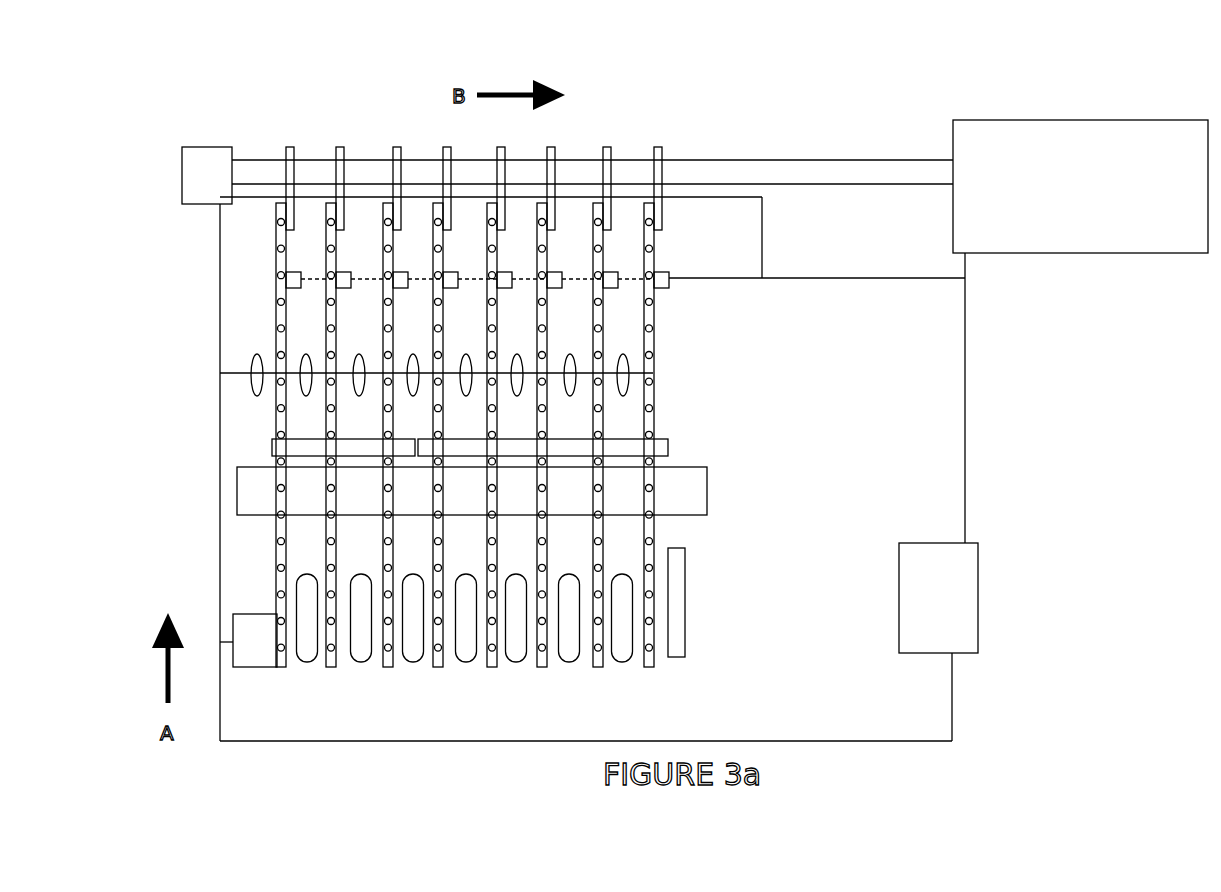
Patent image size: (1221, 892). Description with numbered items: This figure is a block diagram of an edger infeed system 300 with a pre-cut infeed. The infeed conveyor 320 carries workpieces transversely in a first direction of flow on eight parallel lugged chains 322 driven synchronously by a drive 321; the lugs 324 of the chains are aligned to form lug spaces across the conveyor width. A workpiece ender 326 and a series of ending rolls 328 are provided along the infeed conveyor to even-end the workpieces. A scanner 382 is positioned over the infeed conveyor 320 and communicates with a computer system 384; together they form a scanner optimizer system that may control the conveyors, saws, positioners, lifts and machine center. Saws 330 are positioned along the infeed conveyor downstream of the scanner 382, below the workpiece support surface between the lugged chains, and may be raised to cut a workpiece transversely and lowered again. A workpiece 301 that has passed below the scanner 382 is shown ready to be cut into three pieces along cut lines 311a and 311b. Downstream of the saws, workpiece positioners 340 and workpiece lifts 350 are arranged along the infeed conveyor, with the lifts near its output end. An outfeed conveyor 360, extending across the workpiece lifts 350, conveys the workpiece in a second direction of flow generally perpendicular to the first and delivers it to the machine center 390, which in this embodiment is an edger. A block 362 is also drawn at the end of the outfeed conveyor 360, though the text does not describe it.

The edger infeed system 300 is at (200, 97).
The workpiece 301 is at (442, 461).
The cut line 311a is at (413, 447).
The cut line 311b is at (572, 448).
The infeed conveyor 320 is at (519, 623).
The drive 321 is at (274, 650).
The lugged chain 322 is at (494, 461).
The lug 324 is at (651, 655).
The workpiece ender 326 is at (678, 626).
The ending roll 328 is at (457, 649).
The saw 330 is at (303, 357).
The workpiece positioner 340 is at (336, 277).
The workpiece lift 350 is at (338, 150).
The outfeed conveyor 360 is at (733, 170).
The rail drive 362 is at (225, 183).
The scanner 382 is at (688, 495).
The computer system 384 is at (957, 611).
The machine center 390 is at (1098, 198).